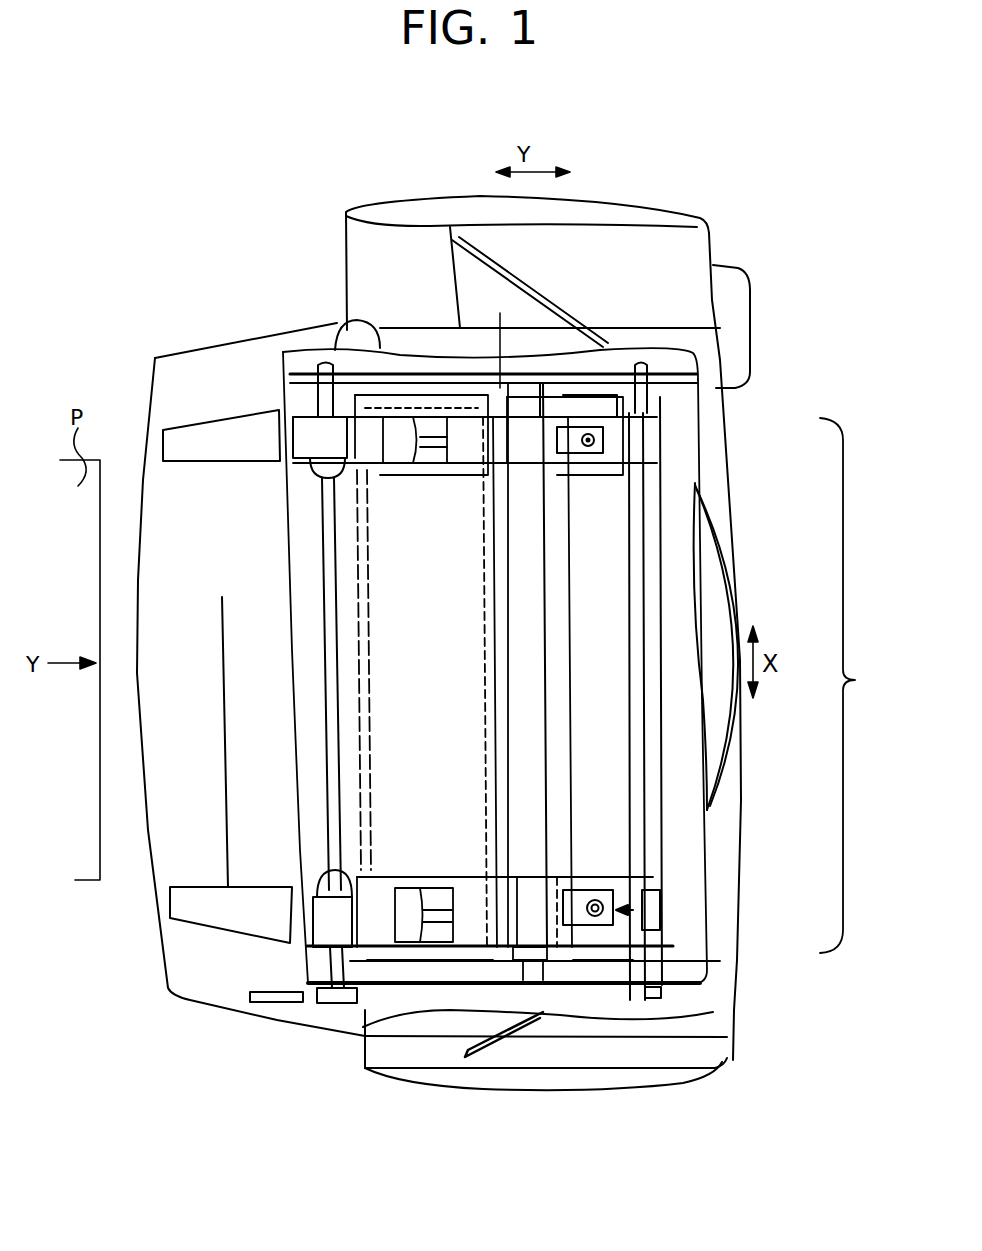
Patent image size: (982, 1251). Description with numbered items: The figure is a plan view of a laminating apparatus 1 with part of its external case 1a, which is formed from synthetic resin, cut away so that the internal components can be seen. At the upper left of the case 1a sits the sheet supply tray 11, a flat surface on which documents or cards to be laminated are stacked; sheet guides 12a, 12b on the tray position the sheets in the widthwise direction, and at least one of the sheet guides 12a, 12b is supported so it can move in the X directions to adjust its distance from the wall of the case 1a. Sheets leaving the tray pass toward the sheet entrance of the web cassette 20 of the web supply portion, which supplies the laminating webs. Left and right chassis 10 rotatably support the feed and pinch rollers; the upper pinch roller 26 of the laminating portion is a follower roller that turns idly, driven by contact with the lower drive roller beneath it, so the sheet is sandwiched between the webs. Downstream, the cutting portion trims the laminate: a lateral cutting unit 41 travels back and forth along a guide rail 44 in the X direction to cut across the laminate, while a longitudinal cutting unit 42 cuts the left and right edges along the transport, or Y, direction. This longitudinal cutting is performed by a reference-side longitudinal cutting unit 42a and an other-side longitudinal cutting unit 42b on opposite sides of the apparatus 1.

The laminating apparatus 1 is at (290, 210).
The case 1a is at (396, 203).
The chassis 10 is at (343, 343).
The sheet supply tray 11 is at (162, 492).
The sheet guide 12a is at (313, 472).
The sheet guide 12b is at (330, 883).
The web cassette 20 is at (405, 550).
The upper pinch roller 26 is at (520, 518).
The lateral cutting unit 41 is at (663, 893).
The longitudinal cutting unit 42 is at (854, 685).
The reference-side longitudinal cutting unit 42a is at (605, 440).
The other-side longitudinal cutting unit 42b is at (660, 913).
The guide rail 44 is at (645, 540).